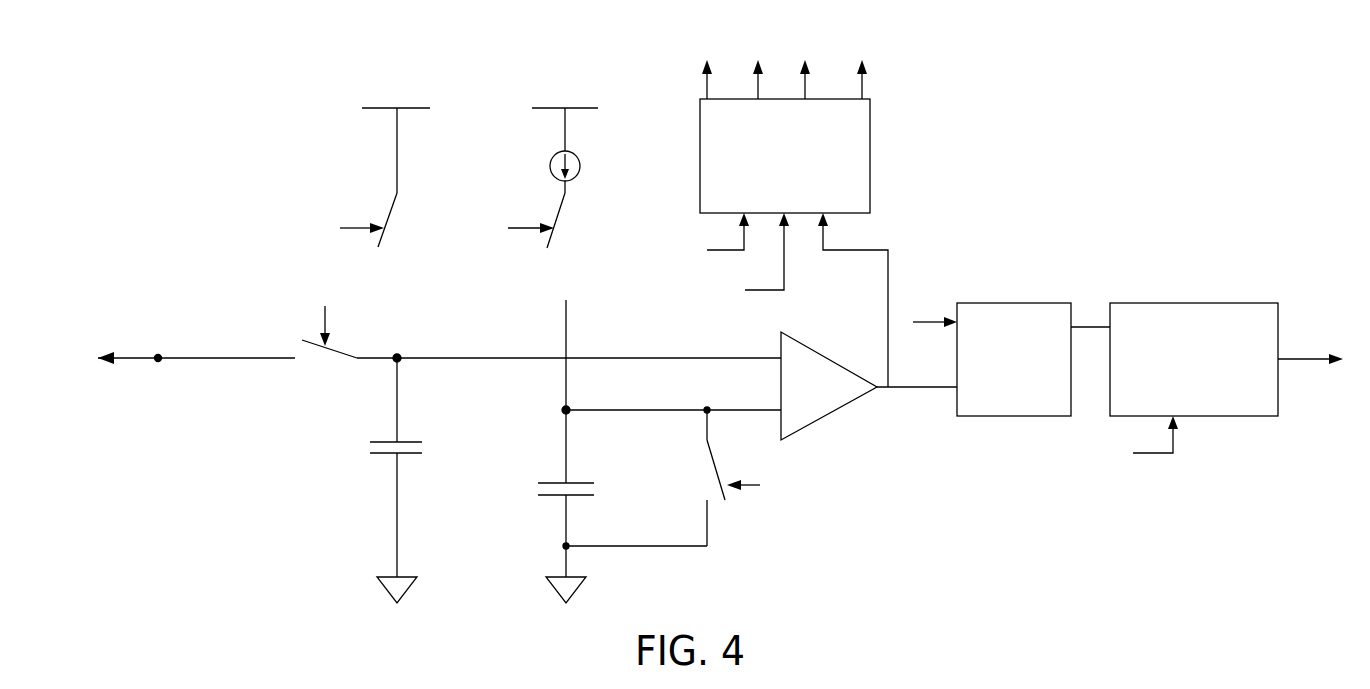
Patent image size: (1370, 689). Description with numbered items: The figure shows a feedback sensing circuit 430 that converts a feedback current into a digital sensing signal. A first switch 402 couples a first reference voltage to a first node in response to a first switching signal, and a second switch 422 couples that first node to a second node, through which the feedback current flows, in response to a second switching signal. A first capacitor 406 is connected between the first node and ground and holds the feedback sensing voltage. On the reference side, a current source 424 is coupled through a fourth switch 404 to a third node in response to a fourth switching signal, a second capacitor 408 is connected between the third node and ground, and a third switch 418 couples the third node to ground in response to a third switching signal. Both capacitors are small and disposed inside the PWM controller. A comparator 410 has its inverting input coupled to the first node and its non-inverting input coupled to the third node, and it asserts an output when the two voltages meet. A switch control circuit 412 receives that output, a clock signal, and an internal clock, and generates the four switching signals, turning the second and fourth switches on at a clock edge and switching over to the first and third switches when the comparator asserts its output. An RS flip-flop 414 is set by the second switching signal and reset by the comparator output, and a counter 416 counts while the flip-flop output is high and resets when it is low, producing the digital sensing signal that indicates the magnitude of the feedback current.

The feedback sensing circuit 430 is at (141, 82).
The first switch 402 is at (396, 208).
The fourth switch 404 is at (563, 208).
The first capacitor 406 is at (409, 441).
The second capacitor 408 is at (541, 499).
The comparator 410 is at (830, 415).
The switch control circuit 412 is at (871, 146).
The flip-flop 414 is at (978, 417).
The counter 416 is at (1205, 417).
The third switch 418 is at (713, 466).
The second switch 422 is at (340, 362).
The current source 424 is at (550, 166).